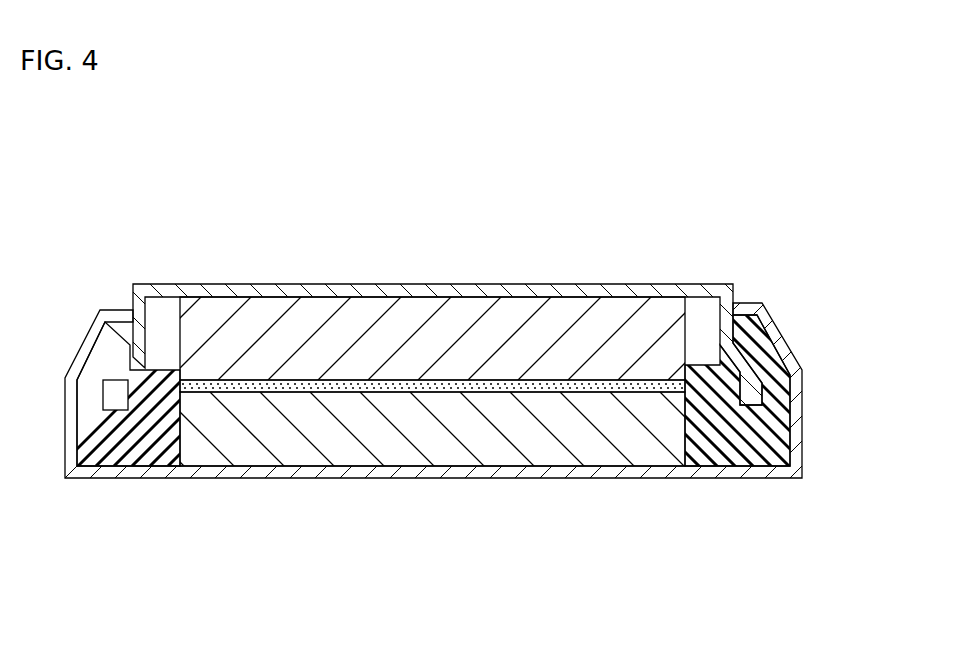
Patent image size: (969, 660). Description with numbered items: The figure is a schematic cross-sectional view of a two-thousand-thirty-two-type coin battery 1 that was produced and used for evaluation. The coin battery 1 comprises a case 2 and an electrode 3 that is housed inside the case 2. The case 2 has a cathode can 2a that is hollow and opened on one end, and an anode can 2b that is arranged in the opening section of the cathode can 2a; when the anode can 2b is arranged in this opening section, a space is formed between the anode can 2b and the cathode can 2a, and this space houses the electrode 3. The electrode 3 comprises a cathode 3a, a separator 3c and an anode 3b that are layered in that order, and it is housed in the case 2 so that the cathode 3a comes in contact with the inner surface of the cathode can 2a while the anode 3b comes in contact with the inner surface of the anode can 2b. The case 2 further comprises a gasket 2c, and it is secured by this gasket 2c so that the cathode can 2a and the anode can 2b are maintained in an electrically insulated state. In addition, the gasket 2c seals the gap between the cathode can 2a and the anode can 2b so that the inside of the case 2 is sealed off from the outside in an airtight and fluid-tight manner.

The 2032-type coin battery 1 is at (458, 273).
The case 2 is at (220, 177).
The cathode can 2a is at (90, 347).
The anode can 2b is at (207, 284).
The gasket 2c is at (82, 345).
The electrode 3 is at (277, 563).
The cathode 3a is at (325, 438).
The anode 3b is at (563, 355).
The separator 3c is at (433, 392).